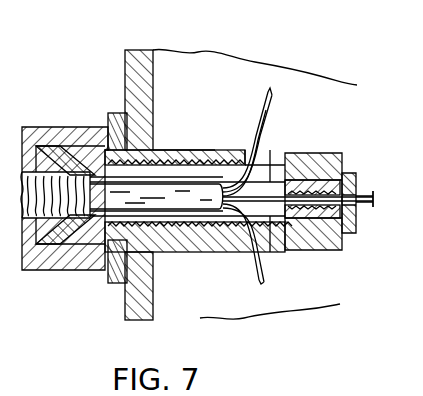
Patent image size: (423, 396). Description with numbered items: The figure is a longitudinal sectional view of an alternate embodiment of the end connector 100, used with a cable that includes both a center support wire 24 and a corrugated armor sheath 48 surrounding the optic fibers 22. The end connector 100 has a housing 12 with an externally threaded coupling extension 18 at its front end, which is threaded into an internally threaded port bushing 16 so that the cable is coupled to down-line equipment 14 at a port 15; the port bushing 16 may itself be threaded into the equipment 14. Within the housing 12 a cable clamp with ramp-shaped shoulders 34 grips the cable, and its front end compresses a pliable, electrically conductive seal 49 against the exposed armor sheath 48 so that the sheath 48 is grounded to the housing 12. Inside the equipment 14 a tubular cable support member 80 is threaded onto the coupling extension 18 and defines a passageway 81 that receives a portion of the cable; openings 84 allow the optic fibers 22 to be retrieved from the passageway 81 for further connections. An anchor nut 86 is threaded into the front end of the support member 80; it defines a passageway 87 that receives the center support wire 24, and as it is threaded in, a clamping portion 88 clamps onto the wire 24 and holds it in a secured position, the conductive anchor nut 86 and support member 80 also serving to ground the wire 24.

The end connector 100 is at (110, 43).
The housing 12 is at (40, 127).
The down-line equipment 14 is at (153, 83).
The port 15 is at (172, 135).
The port bushing 16 is at (118, 112).
The coupling extension 18 is at (181, 252).
The optic fibers 22 is at (268, 92).
The center support wire 24 is at (222, 150).
The ramp-shaped shoulders 34 is at (40, 268).
The corrugated armor sheath 48 is at (88, 127).
The conductive seal 49 is at (63, 140).
The cable support member 80 is at (231, 252).
The passageway 81 is at (296, 250).
The openings 84 is at (252, 154).
The anchor nut 86 is at (350, 172).
The passageway 87 is at (370, 200).
The clamping portion 88 is at (306, 153).